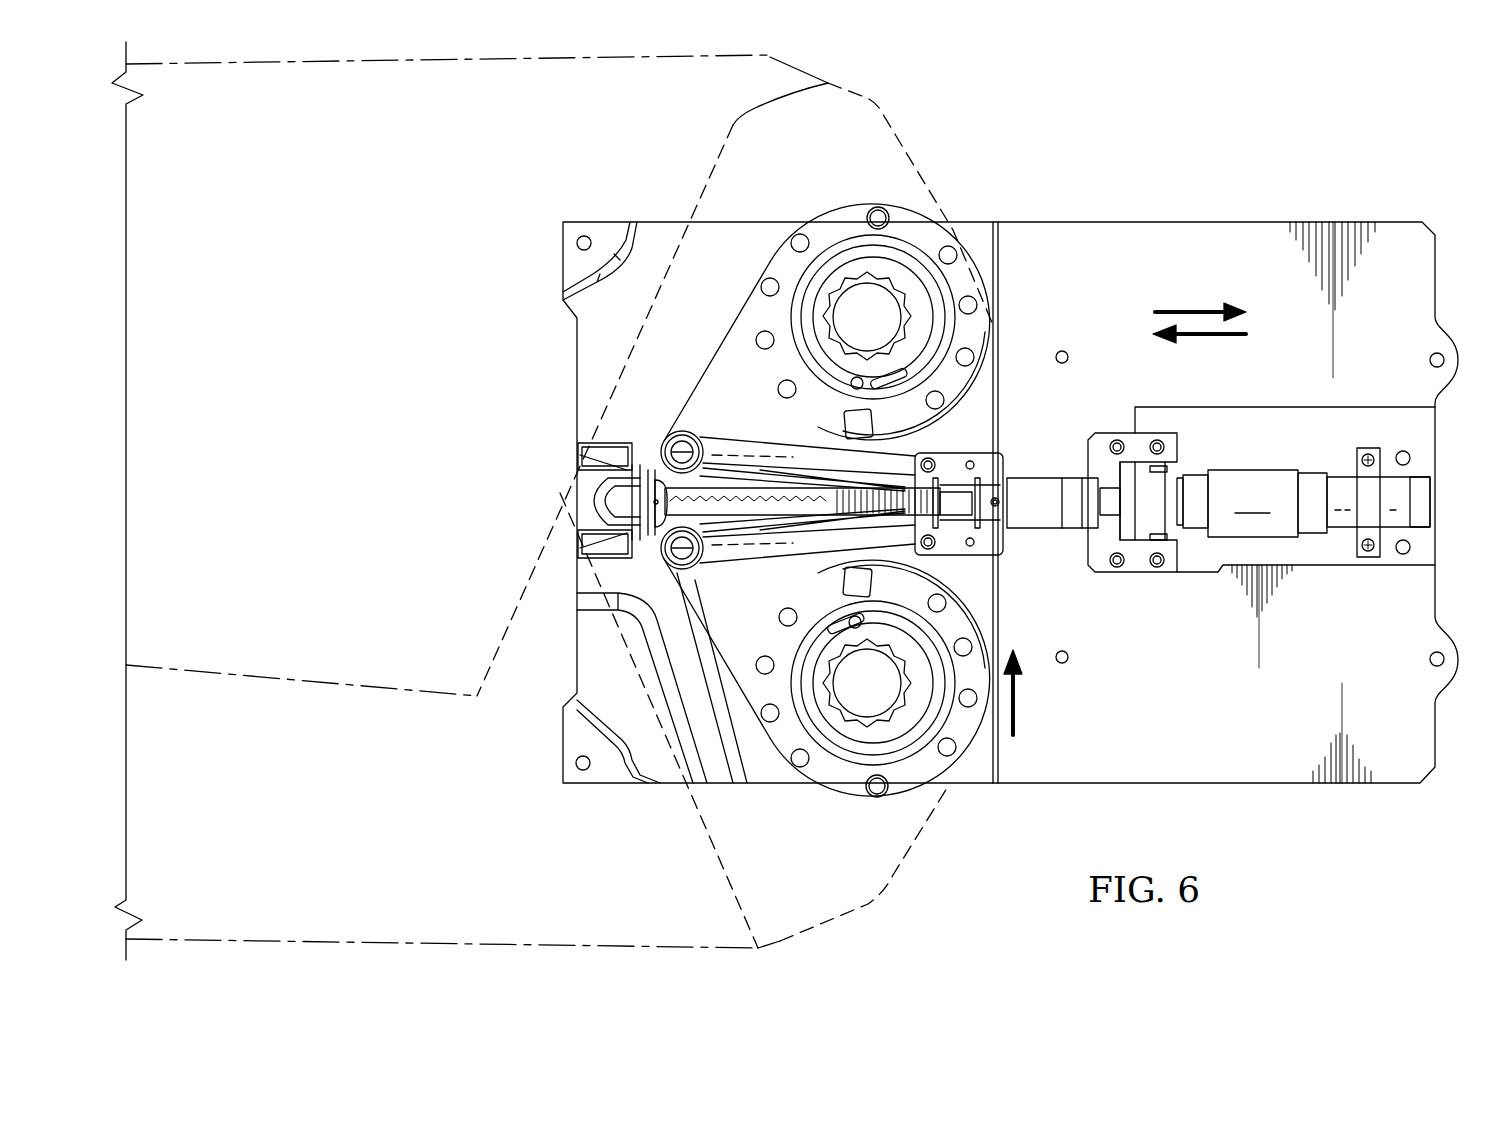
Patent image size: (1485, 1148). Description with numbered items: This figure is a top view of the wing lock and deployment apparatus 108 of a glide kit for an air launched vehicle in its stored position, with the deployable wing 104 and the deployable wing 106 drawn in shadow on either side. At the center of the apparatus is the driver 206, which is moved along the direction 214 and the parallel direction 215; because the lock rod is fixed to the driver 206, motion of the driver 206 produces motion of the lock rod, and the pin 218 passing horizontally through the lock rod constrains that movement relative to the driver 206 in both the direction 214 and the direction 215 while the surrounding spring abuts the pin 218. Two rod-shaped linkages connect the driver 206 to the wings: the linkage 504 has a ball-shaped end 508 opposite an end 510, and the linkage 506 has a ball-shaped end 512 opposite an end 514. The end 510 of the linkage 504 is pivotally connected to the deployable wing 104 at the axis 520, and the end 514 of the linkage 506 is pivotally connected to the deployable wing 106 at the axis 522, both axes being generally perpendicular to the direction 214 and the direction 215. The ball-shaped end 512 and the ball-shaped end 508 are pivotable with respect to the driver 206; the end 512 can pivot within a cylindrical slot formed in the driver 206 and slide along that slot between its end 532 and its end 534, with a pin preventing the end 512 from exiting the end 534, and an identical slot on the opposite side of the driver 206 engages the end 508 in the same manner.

The deployable wing 104 is at (313, 813).
The deployable wing 106 is at (303, 271).
The wing lock and deployment apparatus 108 is at (1017, 703).
The driver 206 is at (1000, 542).
The direction 214 is at (1204, 340).
The direction 215 is at (1196, 308).
The pin 218 is at (945, 530).
The linkage 504 is at (740, 560).
The linkage 506 is at (733, 443).
The end 508 is at (892, 540).
The end 510 is at (665, 610).
The end 512 is at (890, 457).
The end 514 is at (686, 453).
The axis 520 is at (683, 550).
The axis 522 is at (676, 458).
The end 532 is at (1005, 458).
The end 534 is at (935, 450).